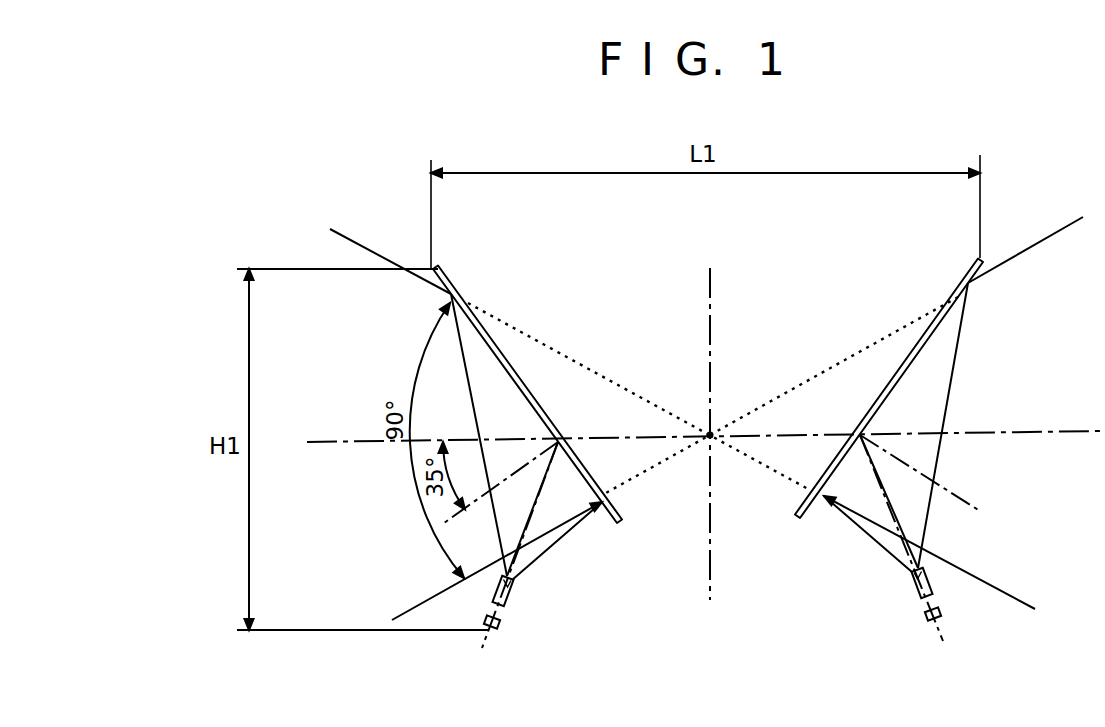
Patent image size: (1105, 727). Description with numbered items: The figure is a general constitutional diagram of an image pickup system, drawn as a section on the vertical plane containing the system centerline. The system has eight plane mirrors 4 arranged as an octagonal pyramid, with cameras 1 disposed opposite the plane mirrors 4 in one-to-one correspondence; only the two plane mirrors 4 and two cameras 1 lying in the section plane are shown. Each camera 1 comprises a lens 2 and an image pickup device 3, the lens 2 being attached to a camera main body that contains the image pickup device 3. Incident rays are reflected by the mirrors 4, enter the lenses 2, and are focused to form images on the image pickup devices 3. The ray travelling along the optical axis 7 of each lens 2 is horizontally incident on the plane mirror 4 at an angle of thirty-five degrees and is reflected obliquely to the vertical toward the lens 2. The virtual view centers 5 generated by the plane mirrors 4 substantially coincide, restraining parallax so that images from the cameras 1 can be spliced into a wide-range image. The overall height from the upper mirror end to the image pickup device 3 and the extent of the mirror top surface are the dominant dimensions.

The camera 1 is at (712, 635).
The lens 2 is at (513, 596).
The image pickup device 3 is at (617, 663).
The plane mirror 4 is at (503, 342).
The virtual view center 5 is at (714, 433).
The optical axis 7 is at (525, 534).